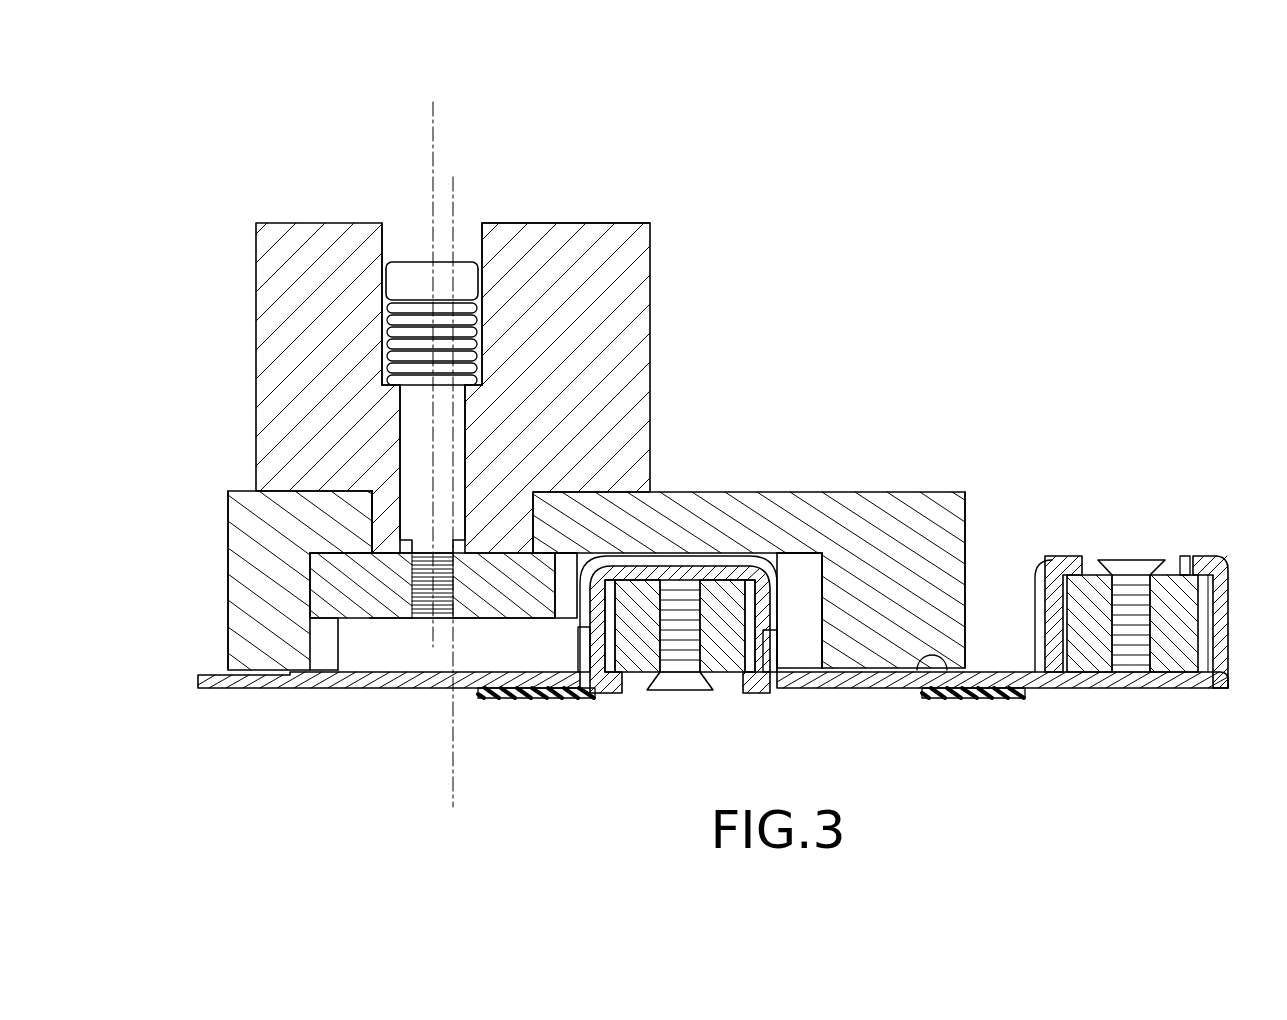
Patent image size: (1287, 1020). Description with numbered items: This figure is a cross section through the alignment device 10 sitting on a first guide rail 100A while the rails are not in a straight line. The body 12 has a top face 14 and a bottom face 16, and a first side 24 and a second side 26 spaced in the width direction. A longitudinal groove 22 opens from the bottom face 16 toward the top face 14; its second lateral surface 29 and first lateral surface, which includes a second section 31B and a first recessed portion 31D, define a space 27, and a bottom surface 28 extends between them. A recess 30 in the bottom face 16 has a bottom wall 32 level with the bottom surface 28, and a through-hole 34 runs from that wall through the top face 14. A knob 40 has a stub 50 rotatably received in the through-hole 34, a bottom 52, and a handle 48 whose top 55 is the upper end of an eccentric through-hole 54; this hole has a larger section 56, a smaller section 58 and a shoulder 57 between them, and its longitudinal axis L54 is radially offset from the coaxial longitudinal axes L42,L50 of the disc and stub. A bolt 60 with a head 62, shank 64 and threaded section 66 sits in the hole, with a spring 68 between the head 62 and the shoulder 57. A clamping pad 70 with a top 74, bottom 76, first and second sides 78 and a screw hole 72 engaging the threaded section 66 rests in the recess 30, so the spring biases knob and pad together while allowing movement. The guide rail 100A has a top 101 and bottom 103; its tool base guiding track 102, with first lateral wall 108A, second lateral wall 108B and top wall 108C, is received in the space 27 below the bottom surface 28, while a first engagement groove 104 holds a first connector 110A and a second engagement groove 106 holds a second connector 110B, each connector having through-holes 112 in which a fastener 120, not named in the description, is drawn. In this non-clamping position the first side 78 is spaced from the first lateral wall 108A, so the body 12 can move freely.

The alignment device 10 is at (687, 172).
The body 12 is at (777, 586).
The top face 14 is at (915, 492).
The bottom face 16 is at (903, 670).
The longitudinal groove 22 is at (797, 640).
The first side 24 is at (228, 590).
The second side 26 is at (965, 525).
The space 27 is at (812, 613).
The bottom surface 28 is at (775, 590).
The second lateral surface 29 is at (585, 562).
The recess 30 is at (330, 653).
The second section 31B is at (748, 640).
The first recessed portion 31D is at (830, 633).
The bottom wall 32 is at (368, 650).
The through-hole 34 is at (265, 580).
The knob 40 is at (420, 339).
The handle 48 is at (608, 266).
The stub 50 is at (385, 503).
The bottom 52 is at (550, 587).
The eccentric through-hole 54 is at (473, 444).
The top 55 is at (539, 223).
The larger section 56 is at (449, 343).
The shoulder 57 is at (388, 388).
The smaller section 58 is at (449, 559).
The bolt 60 is at (467, 250).
The head 62 is at (396, 270).
The shank 64 is at (412, 405).
The threaded section 66 is at (433, 603).
The spring 68 is at (390, 320).
The clamping pad 70 is at (373, 597).
The screw hole 72 is at (403, 597).
The top 74 is at (328, 552).
The bottom 76 is at (478, 620).
The first and second sides 78 is at (370, 598).
The first guide rail 100A is at (713, 718).
The top 101 is at (940, 665).
The tool base guiding track 102 is at (855, 611).
The bottom 103 is at (803, 690).
The first engagement groove 104 is at (638, 648).
The second engagement groove 106 is at (1045, 605).
The first lateral wall 108A is at (583, 650).
The second lateral wall 108B is at (803, 587).
The top wall 108C is at (682, 565).
The first connector 110A is at (658, 647).
The second connector 110B is at (1085, 647).
The through-hole 112 is at (661, 635).
The screw 120 is at (688, 682).
The longitudinal axis L54 is at (433, 148).
The longitudinal axes L42,L50 is at (453, 767).